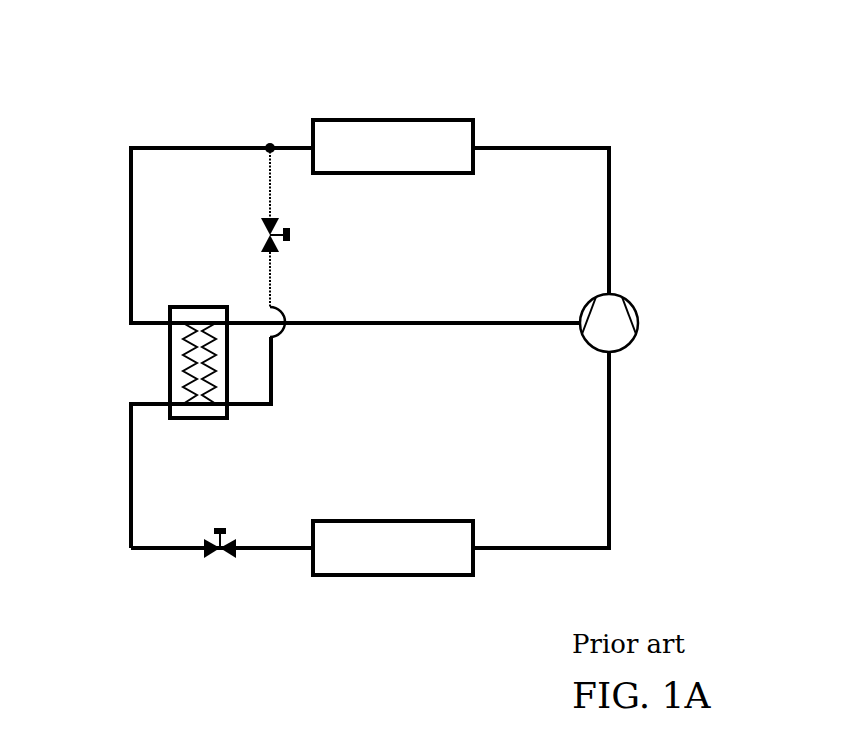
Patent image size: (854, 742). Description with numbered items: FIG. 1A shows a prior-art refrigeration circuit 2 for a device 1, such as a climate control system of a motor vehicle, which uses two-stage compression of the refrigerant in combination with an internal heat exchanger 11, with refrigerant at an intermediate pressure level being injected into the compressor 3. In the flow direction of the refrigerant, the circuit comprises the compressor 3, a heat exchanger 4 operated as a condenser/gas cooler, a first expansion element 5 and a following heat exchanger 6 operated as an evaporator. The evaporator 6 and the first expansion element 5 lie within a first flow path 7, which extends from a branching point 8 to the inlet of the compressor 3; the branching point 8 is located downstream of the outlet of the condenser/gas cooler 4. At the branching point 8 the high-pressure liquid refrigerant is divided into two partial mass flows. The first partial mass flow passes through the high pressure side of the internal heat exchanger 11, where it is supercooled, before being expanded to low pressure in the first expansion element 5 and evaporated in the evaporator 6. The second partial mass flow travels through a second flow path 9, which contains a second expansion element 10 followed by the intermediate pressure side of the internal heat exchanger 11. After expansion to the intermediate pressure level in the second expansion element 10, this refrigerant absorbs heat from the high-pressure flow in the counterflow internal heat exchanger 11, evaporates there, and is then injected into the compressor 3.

The device 1 is at (649, 130).
The refrigeration circuit 2 is at (622, 210).
The compressor 3 is at (638, 323).
The heat exchanger operated as a condenser/gas cooler 4 is at (358, 137).
The first expansion element 5 is at (223, 554).
The heat exchanger operated as an evaporator 6 is at (360, 560).
The first flow path 7 is at (128, 205).
The branching point 8 is at (269, 143).
The second flow path 9 is at (436, 326).
The second expansion element 10 is at (290, 236).
The internal heat exchanger 11 is at (180, 358).